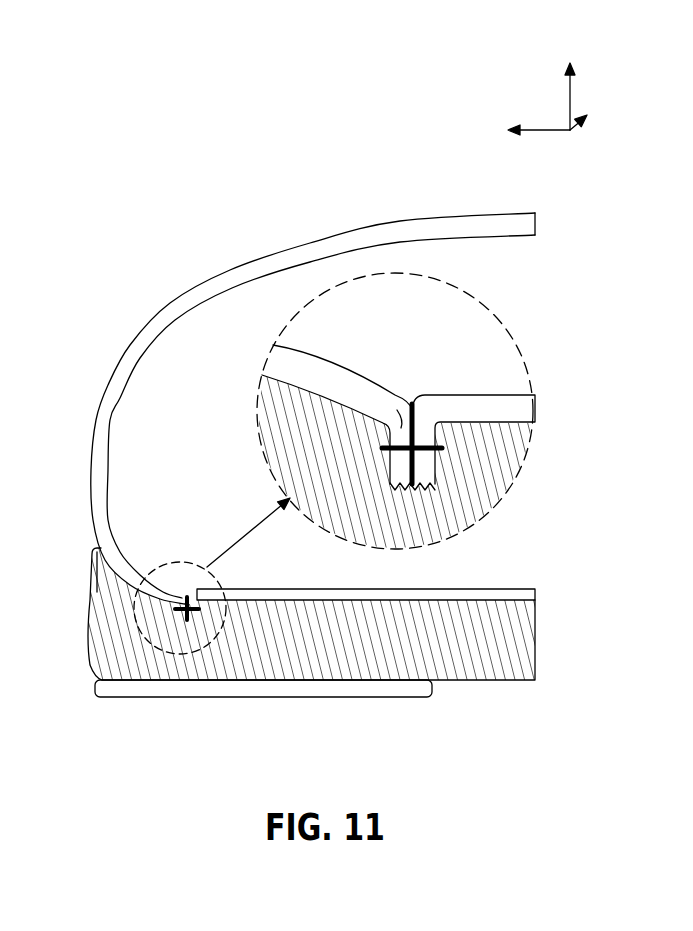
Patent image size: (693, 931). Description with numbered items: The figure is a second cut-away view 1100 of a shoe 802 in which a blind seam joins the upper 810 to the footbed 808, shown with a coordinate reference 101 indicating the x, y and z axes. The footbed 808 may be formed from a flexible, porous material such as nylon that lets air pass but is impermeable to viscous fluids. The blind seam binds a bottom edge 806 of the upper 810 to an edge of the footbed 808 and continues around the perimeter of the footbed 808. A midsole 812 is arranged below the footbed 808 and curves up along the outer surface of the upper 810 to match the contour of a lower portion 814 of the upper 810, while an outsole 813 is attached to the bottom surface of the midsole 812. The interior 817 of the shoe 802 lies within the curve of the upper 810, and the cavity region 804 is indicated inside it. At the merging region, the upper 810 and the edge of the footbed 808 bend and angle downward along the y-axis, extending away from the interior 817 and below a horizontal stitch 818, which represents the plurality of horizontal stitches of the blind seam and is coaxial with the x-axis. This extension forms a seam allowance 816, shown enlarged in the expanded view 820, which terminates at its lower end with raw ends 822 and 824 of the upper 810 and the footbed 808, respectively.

The second cut-away view 1100 is at (150, 95).
The shoe 802 is at (167, 185).
The coordinate axes 101 is at (625, 95).
The upper 810 is at (110, 382).
The interior 817 is at (249, 351).
The cavity 804 is at (112, 477).
The bottom edge 806 is at (180, 598).
The horizontal stitch 818 is at (187, 598).
The seam allowance 816 is at (205, 610).
The lower portion 814 is at (103, 552).
The midsole 812 is at (92, 588).
The outsole 813 is at (273, 688).
The footbed 808 is at (465, 592).
The expanded view 820 is at (490, 306).
The raw end 822 is at (400, 490).
The raw end 824 is at (422, 493).